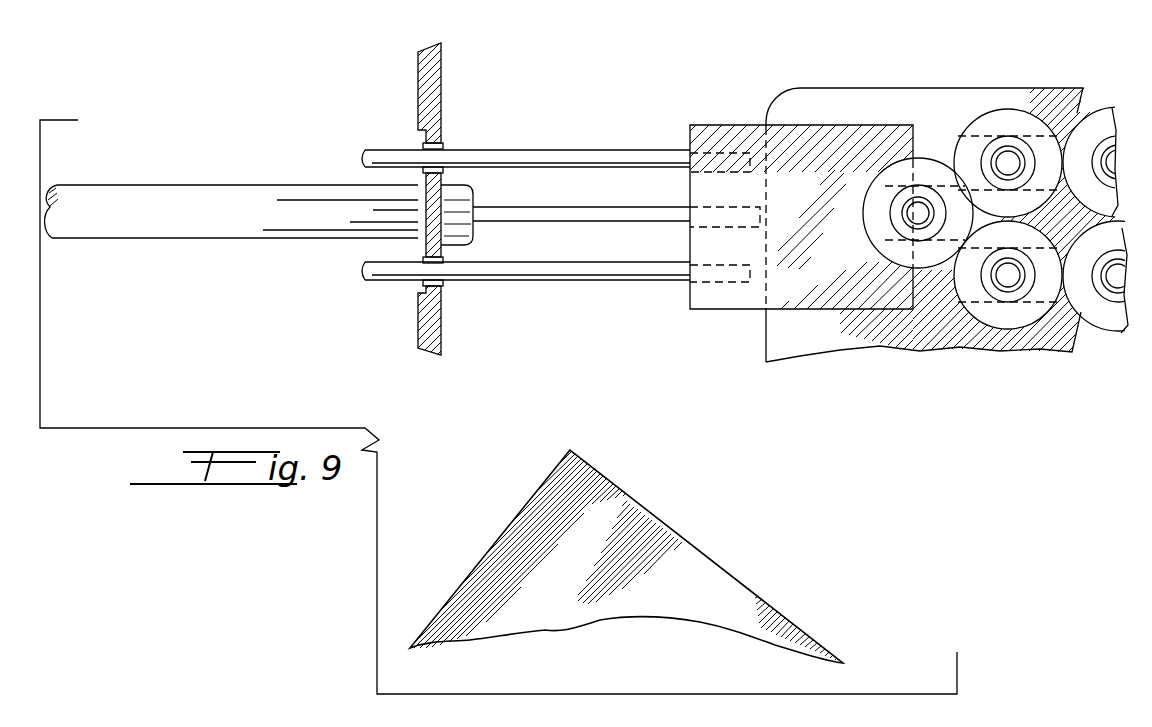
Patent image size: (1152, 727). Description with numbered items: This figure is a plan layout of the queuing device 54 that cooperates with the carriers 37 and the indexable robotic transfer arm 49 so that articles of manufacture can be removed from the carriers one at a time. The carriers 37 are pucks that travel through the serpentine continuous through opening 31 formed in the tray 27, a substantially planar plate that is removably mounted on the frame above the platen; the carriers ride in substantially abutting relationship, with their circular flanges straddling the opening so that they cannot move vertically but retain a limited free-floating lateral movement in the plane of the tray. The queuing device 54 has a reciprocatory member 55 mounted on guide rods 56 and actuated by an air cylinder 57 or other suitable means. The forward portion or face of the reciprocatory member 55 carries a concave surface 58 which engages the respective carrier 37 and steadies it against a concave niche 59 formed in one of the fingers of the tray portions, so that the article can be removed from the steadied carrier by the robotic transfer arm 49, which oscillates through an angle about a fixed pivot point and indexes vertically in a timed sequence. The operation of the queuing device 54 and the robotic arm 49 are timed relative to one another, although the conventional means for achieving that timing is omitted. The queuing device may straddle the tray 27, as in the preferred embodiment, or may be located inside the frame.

The tray 27 is at (847, 108).
The continuous through opening 31 is at (1053, 205).
The carriers 37 is at (970, 120).
The indexable robotic transfer arm 49 is at (712, 568).
The queuing device 54 is at (370, 125).
The reciprocatory member 55 is at (806, 273).
The guide rods 56 is at (524, 158).
The air cylinder 57 is at (220, 223).
The concave surface 58 is at (841, 300).
The concave niche 59 is at (934, 228).